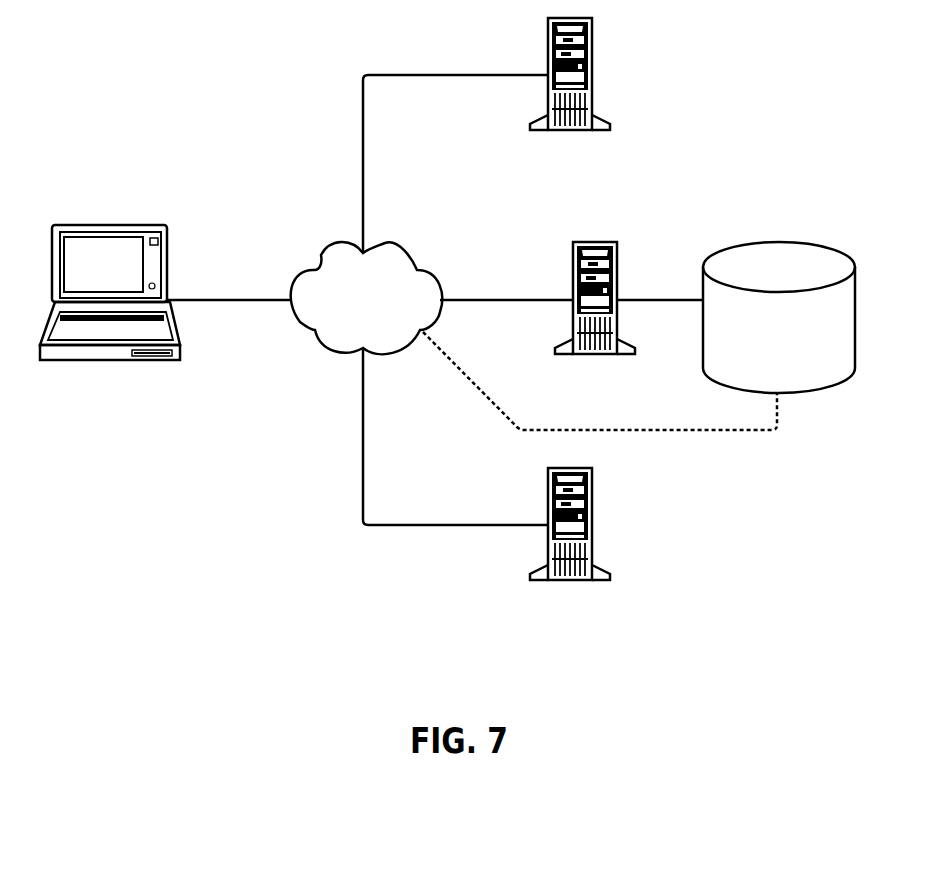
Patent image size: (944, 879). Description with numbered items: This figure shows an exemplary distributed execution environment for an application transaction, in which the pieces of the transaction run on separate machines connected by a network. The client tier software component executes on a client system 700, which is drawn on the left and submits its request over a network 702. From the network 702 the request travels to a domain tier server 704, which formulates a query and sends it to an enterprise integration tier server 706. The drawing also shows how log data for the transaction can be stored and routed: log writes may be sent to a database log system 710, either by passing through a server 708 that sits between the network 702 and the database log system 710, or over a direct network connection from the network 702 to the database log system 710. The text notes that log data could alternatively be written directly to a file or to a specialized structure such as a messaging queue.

The client system 700 is at (110, 307).
The network 702 is at (366, 298).
The domain tier server 704 is at (570, 113).
The enterprise integration tier server 706 is at (570, 576).
The server 708 is at (595, 325).
The database log system 710 is at (779, 317).